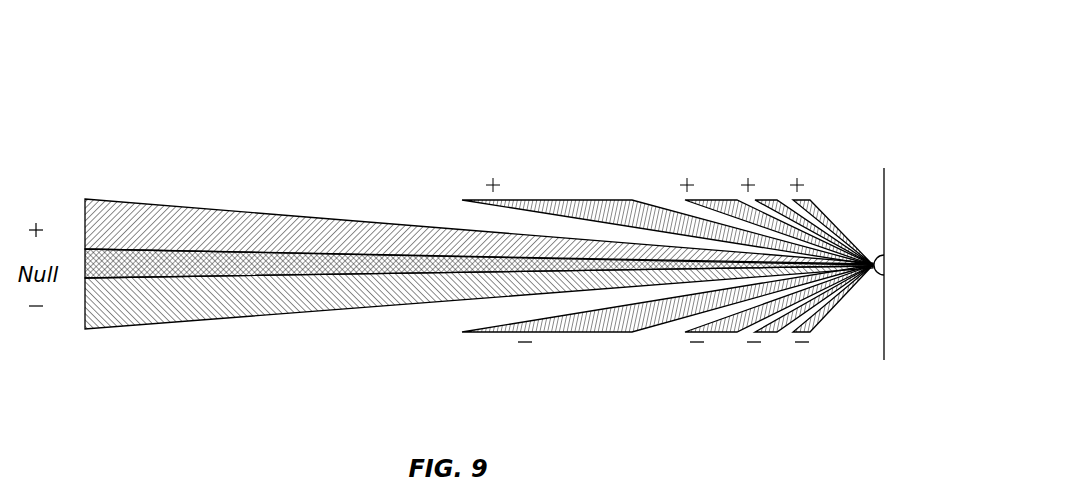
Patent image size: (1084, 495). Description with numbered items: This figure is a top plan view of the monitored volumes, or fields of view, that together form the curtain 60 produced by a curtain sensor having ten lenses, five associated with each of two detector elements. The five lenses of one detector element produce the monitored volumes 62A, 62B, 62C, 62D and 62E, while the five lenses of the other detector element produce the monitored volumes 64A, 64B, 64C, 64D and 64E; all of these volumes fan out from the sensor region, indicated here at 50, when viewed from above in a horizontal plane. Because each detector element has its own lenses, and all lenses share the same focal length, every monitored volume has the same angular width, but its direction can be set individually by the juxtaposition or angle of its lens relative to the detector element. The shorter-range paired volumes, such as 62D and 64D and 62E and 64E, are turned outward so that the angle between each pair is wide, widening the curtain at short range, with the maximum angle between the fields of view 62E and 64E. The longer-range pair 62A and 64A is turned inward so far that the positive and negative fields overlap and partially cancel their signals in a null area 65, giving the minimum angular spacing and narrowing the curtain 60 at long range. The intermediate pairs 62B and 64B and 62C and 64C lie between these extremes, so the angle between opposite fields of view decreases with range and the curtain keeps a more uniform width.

The curtain 60 is at (175, 76).
The focal point / pickup 50 is at (872, 250).
The monitored volume 62A is at (150, 218).
The monitored volume 64A is at (90, 331).
The null area 65 is at (178, 268).
The monitored volume 62B is at (557, 204).
The monitored volume 64B is at (557, 331).
The monitored volume 62C is at (708, 204).
The monitored volume 64C is at (722, 331).
The monitored volume 62D is at (772, 204).
The monitored volume 64D is at (778, 331).
The monitored volume 62E is at (808, 204).
The monitored volume 64E is at (812, 331).